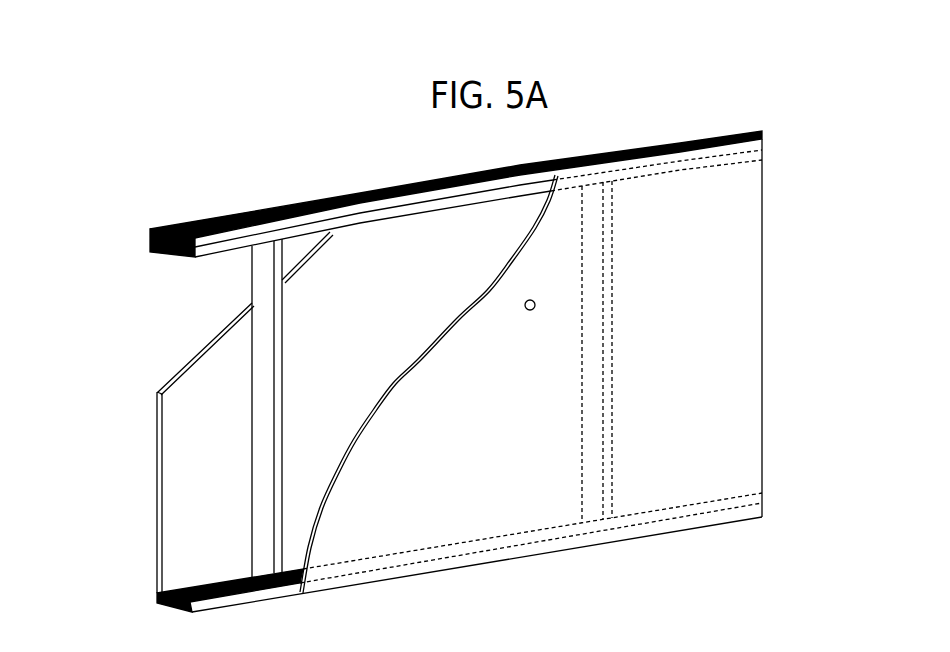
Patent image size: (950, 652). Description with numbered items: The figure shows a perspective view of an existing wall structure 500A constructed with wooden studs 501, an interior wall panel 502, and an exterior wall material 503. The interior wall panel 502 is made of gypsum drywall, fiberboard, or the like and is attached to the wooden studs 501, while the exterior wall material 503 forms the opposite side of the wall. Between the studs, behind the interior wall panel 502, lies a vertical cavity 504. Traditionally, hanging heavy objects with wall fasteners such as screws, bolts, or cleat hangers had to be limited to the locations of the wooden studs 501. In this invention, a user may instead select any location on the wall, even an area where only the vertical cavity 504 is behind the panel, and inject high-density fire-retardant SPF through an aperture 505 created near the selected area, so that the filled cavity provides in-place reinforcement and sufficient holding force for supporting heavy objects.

The existing wall structure 500A is at (797, 126).
The wooden studs 501 is at (252, 283).
The interior wall panel 502 is at (733, 382).
The exterior wall material 503 is at (155, 422).
The vertical cavity 504 is at (403, 270).
The aperture 505 is at (523, 303).